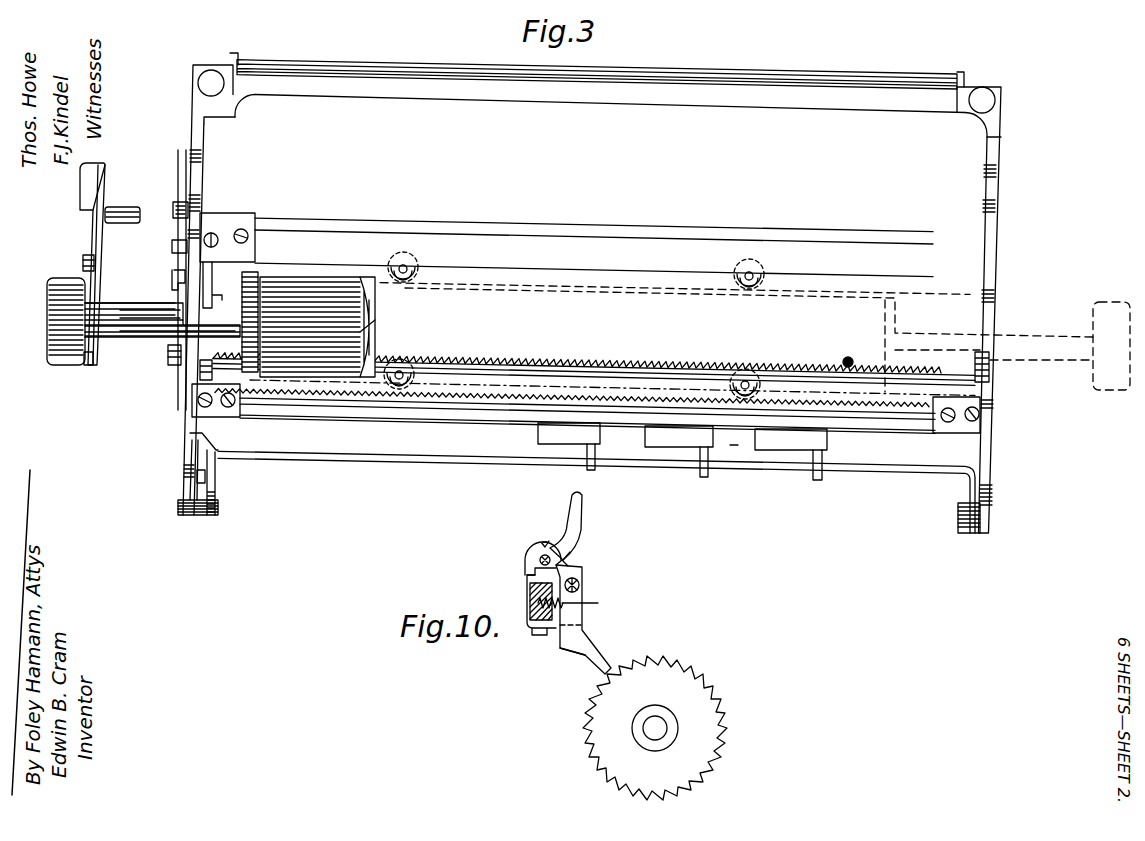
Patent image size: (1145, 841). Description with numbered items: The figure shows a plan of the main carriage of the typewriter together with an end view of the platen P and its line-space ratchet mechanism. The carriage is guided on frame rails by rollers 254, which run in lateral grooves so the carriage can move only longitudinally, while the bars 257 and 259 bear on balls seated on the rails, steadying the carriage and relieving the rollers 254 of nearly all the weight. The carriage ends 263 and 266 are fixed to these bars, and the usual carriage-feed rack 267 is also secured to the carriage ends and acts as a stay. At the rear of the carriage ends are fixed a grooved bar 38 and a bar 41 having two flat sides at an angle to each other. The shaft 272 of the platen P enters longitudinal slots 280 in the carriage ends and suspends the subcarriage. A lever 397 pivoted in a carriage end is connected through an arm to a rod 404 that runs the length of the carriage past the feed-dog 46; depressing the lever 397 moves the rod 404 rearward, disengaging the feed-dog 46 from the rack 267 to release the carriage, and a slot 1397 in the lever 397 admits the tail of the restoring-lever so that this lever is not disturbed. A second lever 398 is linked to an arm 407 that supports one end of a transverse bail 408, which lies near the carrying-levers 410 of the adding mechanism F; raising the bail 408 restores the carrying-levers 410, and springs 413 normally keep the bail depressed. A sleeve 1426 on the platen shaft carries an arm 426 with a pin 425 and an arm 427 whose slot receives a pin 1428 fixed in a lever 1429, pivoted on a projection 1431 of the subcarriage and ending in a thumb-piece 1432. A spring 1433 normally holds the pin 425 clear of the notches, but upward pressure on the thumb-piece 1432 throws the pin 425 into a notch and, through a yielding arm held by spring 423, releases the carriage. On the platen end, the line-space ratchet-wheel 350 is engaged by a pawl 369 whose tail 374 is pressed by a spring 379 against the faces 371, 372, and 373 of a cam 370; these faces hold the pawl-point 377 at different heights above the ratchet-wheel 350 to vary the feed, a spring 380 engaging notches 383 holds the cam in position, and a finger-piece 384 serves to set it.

In FIG. 3, the bar 41 is at (805, 78).
In FIG. 3, the bar 38 is at (730, 110).
In FIG. 3, the carriage end 263 is at (192, 127).
In FIG. 3, the carriage end 266 is at (996, 183).
In FIG. 3, the bar 257 is at (600, 238).
In FIG. 3, the lever 397 is at (230, 258).
In FIG. 3, the slot 1397 is at (215, 272).
In FIG. 3, the rollers 254 is at (408, 262).
In FIG. 3, the carriage-feed rack 267 is at (512, 350).
In FIG. 3, the rod 404 is at (630, 364).
In FIG. 3, the feed-dog 46 is at (843, 360).
In FIG. 3, the longitudinal slots 280 is at (993, 328).
In FIG. 3, the line-space ratchet-wheel 350 is at (240, 414).
In FIG. 10, the line-space ratchet-wheel 350 is at (693, 680).
In FIG. 3, the transverse bail 408 is at (495, 466).
In FIG. 3, the carrying-levers 410 is at (682, 460).
In FIG. 3, the bar 259 is at (633, 410).
In FIG. 3, the adding mechanism F is at (733, 437).
In FIG. 3, the arm 407 is at (205, 458).
In FIG. 3, the springs 413 is at (195, 515).
In FIG. 3, the lever 398 is at (215, 290).
In FIG. 3, the paper-platen P is at (378, 320).
In FIG. 3, the spring 423 is at (190, 205).
In FIG. 3, the pin 425 is at (174, 274).
In FIG. 3, the arm 426 is at (168, 362).
In FIG. 3, the sleeve 1426 is at (125, 310).
In FIG. 3, the arm 427 is at (62, 280).
In FIG. 3, the thumb-piece 1432 is at (80, 170).
In FIG. 3, the lever 1429 is at (90, 215).
In FIG. 3, the pin 1428 is at (83, 258).
In FIG. 3, the projection 1431 is at (124, 207).
In FIG. 3, the spring 1433 is at (88, 365).
In FIG. 10, the platen shaft 272 is at (660, 728).
In FIG. 10, the spring 380 is at (527, 585).
In FIG. 10, the spring 379 is at (587, 608).
In FIG. 10, the cam 370 is at (538, 546).
In FIG. 10, the cam face 371 is at (527, 565).
In FIG. 10, the notches 383 is at (545, 540).
In FIG. 10, the finger-piece 384 is at (583, 520).
In FIG. 10, the tail 374 is at (586, 578).
In FIG. 10, the cam face 372 is at (566, 556).
In FIG. 10, the cam face 373 is at (572, 568).
In FIG. 10, the pawl-point 377 is at (592, 625).
In FIG. 10, the pawl 369 is at (575, 652).